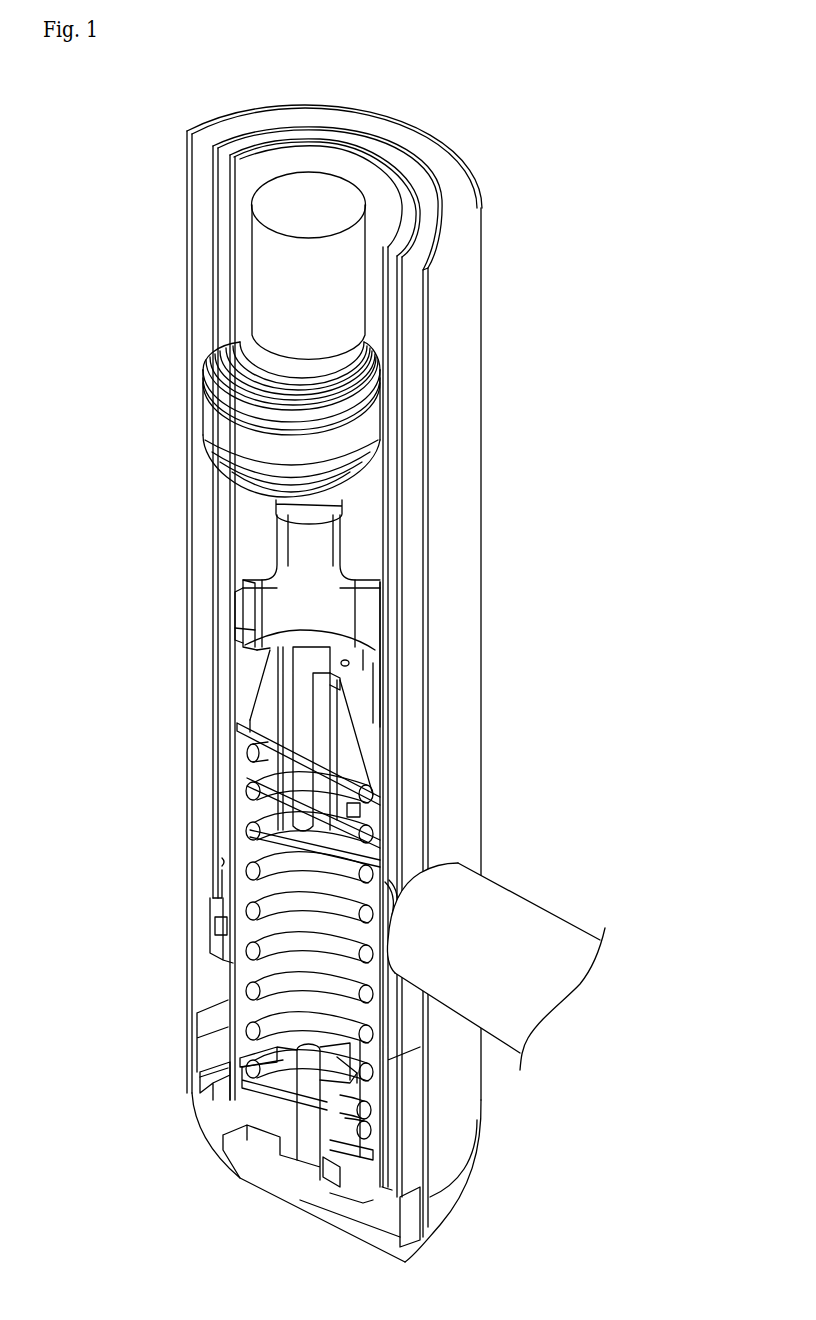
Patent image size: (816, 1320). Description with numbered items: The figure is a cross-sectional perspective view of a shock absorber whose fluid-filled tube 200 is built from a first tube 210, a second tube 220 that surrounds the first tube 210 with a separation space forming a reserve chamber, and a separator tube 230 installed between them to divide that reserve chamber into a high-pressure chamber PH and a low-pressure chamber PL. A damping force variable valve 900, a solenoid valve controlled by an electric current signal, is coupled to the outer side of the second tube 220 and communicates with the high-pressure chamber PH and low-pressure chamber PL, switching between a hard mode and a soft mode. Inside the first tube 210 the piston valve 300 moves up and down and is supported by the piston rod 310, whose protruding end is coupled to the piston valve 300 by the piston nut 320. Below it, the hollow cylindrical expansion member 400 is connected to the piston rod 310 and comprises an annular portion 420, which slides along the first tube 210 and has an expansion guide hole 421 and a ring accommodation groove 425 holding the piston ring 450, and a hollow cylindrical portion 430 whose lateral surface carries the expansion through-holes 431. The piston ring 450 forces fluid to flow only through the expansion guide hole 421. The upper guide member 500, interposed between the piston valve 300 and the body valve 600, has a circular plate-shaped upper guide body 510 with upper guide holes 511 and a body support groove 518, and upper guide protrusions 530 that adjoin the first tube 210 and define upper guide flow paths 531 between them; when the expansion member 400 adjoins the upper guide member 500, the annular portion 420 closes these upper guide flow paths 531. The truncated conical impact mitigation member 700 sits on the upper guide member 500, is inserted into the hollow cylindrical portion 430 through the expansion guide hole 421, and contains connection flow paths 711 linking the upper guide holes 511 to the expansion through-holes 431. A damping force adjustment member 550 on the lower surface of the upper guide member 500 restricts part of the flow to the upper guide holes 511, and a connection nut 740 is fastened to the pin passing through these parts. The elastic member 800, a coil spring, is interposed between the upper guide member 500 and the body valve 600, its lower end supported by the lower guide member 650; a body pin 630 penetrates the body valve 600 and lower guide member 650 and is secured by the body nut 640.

The tube 200 is at (545, 733).
The first tube 210 is at (392, 747).
The second tube 220 is at (432, 788).
The separator tube 230 is at (405, 770).
The piston valve 300 is at (224, 427).
The piston rod 310 is at (270, 290).
The piston nut 320 is at (276, 510).
The hollow cylindrical expansion member 400 is at (350, 587).
The annular portion 420 is at (270, 593).
The expansion guide hole 421 is at (275, 645).
The ring accommodation groove 425 is at (252, 628).
The hollow cylindrical portion 430 is at (302, 538).
The expansion through-holes 431 is at (366, 554).
The piston ring 450 is at (233, 605).
The upper guide member 500 is at (349, 803).
The upper guide body 510 is at (255, 775).
The upper guide holes 511 is at (252, 790).
The body support groove 518 is at (250, 750).
The upper guide protrusions 530 is at (237, 733).
The upper guide flow paths 531 is at (251, 718).
The damping force adjustment member 550 is at (250, 823).
The high-pressure chamber PH is at (220, 862).
The low-pressure chamber PL is at (200, 910).
The body valve 600 is at (233, 1112).
The body pin 630 is at (298, 1173).
The body nut 640 is at (341, 1087).
The lower guide member 650 is at (339, 1127).
The impact mitigation member 700 is at (327, 648).
The connection flow paths 711 is at (340, 682).
The connection nut 740 is at (337, 836).
The elastic member 800 is at (245, 991).
The damping force variable valve 900 is at (559, 922).